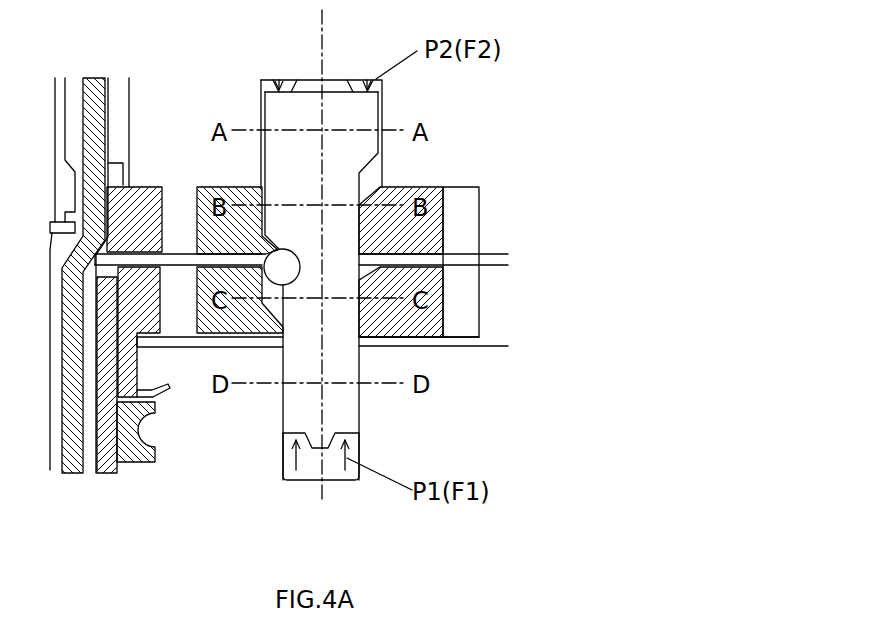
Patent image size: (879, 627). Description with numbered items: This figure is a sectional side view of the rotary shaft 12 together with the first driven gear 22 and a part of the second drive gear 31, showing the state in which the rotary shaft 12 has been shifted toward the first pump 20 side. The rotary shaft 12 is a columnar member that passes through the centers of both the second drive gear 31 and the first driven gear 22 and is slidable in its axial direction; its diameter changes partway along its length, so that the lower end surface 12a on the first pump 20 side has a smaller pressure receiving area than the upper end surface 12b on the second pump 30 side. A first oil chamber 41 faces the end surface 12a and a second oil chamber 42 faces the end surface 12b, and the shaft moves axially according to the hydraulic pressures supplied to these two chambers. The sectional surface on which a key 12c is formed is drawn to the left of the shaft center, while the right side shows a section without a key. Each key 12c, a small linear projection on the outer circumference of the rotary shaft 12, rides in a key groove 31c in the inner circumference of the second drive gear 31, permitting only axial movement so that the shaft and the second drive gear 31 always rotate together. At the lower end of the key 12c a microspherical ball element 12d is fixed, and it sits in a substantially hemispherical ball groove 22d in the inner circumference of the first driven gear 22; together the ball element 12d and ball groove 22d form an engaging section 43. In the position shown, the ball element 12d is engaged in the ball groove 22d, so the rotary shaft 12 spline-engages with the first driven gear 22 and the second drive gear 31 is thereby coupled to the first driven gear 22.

The rotary shaft 12 is at (361, 405).
The end surface 12a is at (358, 443).
The end surface 12b is at (375, 92).
The key 12c is at (262, 200).
The ball element 12d is at (272, 278).
The first pump 20 is at (500, 328).
The first driven gear 22 is at (480, 282).
The ball groove 22d is at (261, 313).
The second pump 30 is at (477, 165).
The second drive gear 31 is at (480, 203).
The key groove 31c is at (262, 246).
The first oil chamber 41 is at (337, 477).
The second oil chamber 42 is at (355, 80).
The engaging section 43 is at (193, 452).